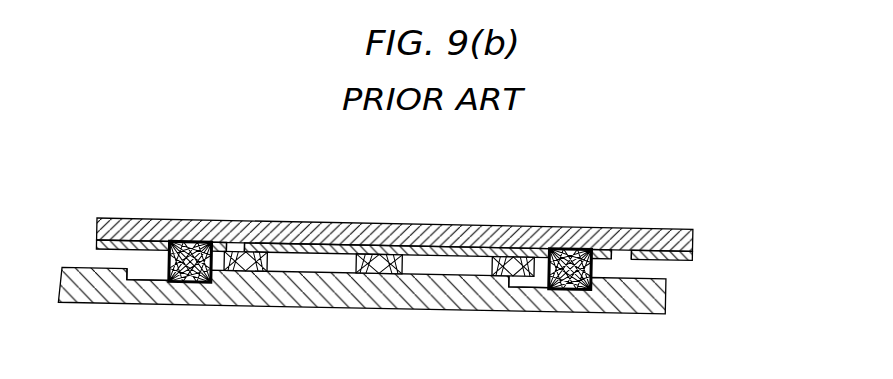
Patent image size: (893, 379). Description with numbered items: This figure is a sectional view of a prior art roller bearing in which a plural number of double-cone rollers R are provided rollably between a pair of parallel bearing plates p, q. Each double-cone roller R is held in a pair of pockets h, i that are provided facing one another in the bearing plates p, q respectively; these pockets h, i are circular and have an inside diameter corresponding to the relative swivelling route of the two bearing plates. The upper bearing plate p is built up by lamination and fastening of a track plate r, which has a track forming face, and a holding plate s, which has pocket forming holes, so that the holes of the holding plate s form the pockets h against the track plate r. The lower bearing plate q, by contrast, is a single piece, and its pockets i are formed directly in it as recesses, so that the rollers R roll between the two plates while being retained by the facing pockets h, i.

The double-cone roller R is at (188, 240).
The pocket h is at (231, 240).
The pocket i is at (148, 273).
The track plate r is at (673, 221).
The holding plate s is at (409, 240).
The bearing plate p is at (431, 213).
The bearing plate q is at (649, 303).